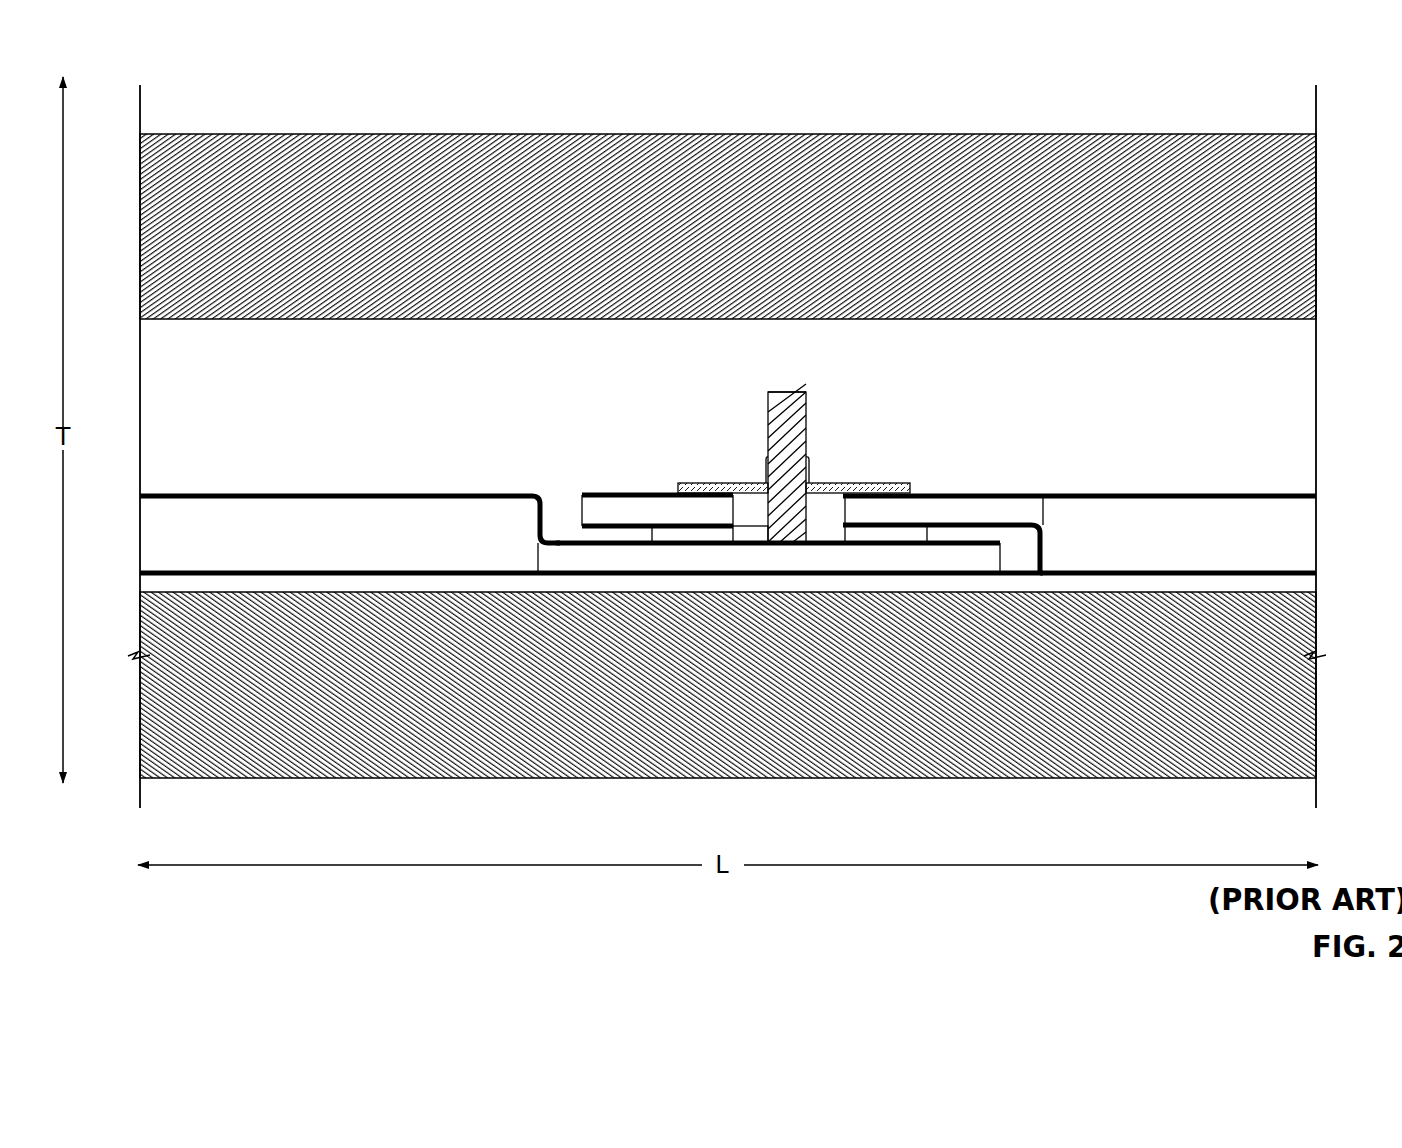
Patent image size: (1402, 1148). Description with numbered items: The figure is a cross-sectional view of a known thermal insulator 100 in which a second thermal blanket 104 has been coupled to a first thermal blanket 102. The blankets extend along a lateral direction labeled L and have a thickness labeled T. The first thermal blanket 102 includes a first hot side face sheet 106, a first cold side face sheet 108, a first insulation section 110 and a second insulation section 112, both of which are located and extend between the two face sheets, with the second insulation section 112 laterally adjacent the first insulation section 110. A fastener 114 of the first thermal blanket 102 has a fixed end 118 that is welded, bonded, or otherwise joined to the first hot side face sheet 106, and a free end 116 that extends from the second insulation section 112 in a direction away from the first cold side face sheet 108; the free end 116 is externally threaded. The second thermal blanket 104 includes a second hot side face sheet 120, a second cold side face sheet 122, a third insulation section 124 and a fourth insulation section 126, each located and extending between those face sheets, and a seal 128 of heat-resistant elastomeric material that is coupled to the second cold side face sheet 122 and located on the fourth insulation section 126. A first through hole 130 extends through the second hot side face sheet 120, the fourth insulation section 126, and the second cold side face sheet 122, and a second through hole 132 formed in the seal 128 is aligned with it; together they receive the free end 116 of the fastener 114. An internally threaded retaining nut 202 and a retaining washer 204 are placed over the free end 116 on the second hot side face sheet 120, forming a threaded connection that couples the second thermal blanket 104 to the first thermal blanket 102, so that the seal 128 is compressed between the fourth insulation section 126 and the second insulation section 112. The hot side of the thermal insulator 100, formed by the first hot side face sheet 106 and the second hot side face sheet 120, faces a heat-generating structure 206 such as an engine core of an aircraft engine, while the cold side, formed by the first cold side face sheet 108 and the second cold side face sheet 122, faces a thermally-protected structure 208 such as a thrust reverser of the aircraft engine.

The thermal insulator 100 is at (196, 496).
The first thermal blanket 102 is at (257, 496).
The second thermal blanket 104 is at (1262, 496).
The first hot side face sheet 106 is at (322, 496).
The first cold side face sheet 108 is at (477, 570).
The first insulation section 110 is at (405, 517).
The second insulation section 112 is at (573, 560).
The fastener 114 is at (769, 415).
The free end 116 is at (797, 392).
The fixed end 118 is at (772, 492).
The second hot side face sheet 120 is at (1212, 496).
The second cold side face sheet 122 is at (1107, 496).
The third insulation section 124 is at (1160, 496).
The fourth insulation section 126 is at (1020, 496).
The seal 128 is at (670, 535).
The first through hole 130 is at (837, 512).
The second through hole 132 is at (735, 525).
The retaining nut 202 is at (810, 475).
The retaining washer 204 is at (910, 488).
The heat-generating structure 206 is at (755, 160).
The thermally-protected structure 208 is at (762, 720).